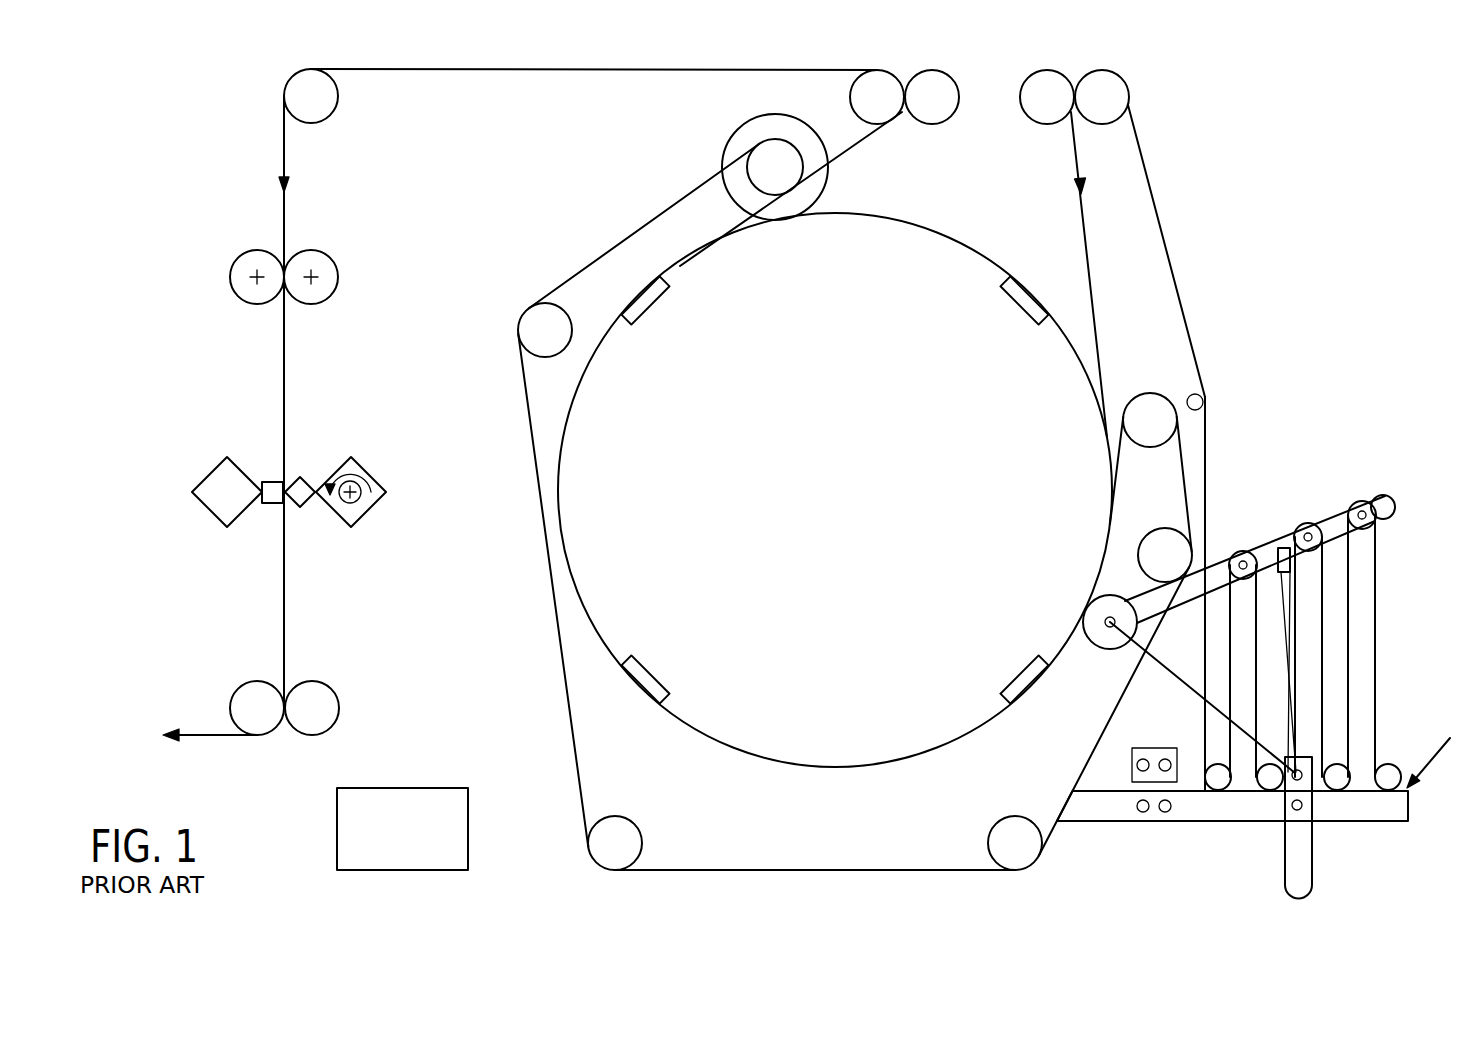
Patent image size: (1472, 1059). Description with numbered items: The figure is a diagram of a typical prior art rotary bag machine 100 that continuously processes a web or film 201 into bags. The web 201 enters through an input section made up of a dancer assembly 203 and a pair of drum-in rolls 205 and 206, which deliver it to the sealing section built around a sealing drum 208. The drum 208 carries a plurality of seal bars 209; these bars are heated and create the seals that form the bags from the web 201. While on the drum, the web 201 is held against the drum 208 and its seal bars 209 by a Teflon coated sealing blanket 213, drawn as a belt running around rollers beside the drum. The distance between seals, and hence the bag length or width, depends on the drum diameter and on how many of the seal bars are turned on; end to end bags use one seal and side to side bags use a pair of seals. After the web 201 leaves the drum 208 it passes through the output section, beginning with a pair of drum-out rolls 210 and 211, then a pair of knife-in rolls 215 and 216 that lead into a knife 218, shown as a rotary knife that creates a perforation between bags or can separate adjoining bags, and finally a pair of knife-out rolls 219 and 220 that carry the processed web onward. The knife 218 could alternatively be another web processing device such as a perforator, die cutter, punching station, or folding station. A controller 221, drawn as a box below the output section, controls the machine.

The rotary bag machine 100 is at (210, 150).
The web or film 201 is at (1165, 232).
The dancer assembly 203 is at (1310, 430).
The drum-in roll 205 is at (1112, 80).
The drum-in roll 206 is at (1036, 82).
The sealing drum 208 is at (857, 506).
The seal bars 209 is at (654, 310).
The drum-out roll 210 is at (933, 113).
The drum-out roll 211 is at (886, 79).
The sealing blanket 213 is at (568, 725).
The knife-in roll 215 is at (260, 260).
The knife-in roll 216 is at (308, 262).
The knife 218 is at (208, 418).
The knife-out roll 219 is at (250, 696).
The knife-out roll 220 is at (316, 690).
The controller 221 is at (337, 830).